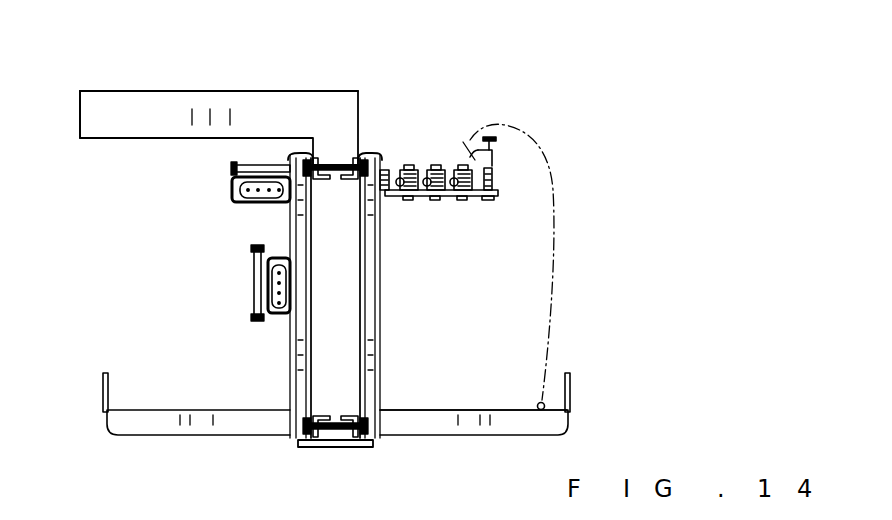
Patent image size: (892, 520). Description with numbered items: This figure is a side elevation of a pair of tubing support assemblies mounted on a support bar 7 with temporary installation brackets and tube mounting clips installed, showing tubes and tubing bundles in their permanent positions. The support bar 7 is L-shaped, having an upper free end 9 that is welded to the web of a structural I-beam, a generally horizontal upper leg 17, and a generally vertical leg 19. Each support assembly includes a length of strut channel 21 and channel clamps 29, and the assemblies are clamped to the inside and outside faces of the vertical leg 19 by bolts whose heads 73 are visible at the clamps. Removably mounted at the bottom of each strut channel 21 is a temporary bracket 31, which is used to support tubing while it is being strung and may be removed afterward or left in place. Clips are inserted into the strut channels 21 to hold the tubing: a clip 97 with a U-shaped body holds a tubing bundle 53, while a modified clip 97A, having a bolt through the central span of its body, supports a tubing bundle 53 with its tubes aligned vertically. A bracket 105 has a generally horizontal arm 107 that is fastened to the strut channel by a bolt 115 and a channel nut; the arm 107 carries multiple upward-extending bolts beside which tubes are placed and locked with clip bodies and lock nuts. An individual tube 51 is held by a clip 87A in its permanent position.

The support bar 7 is at (306, 88).
The upper free end 9 is at (80, 115).
The upper leg 17 is at (213, 100).
The vertical leg 19 is at (340, 322).
The strut channel 21 is at (372, 313).
The channel clamp 29 is at (368, 156).
The temporary bracket 31 is at (157, 408).
The tube 51 is at (537, 404).
The tubing bundle 53 is at (233, 178).
The bolt head 73 is at (330, 163).
The clip 87A is at (503, 174).
The clip 97 is at (257, 203).
The clip 97A is at (262, 294).
The bracket 105 is at (408, 200).
The arm 107 is at (477, 408).
The bolt 115 is at (390, 172).